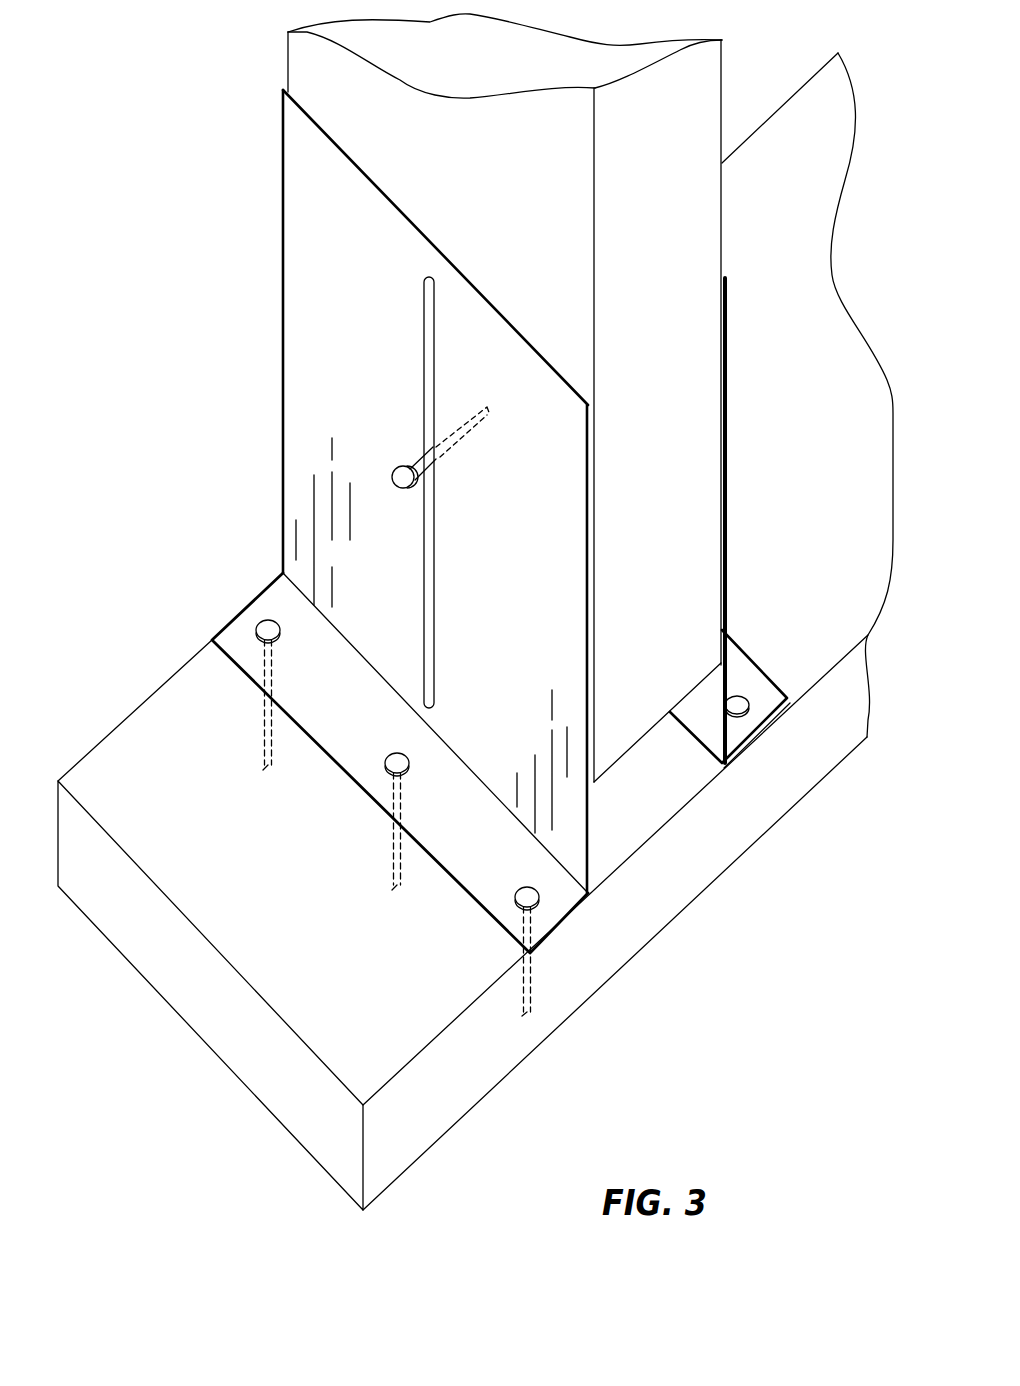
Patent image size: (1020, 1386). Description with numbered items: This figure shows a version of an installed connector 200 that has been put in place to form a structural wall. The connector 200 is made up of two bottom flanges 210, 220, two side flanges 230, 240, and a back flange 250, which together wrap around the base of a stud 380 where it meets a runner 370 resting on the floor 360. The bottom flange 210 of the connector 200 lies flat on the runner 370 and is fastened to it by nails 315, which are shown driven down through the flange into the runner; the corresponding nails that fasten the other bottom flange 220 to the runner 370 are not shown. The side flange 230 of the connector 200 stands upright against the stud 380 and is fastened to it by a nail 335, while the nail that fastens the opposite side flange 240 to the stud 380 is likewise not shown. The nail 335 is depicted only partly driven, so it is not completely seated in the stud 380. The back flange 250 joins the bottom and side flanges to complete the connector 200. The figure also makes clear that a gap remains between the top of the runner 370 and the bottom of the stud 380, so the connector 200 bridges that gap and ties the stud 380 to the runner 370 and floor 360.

The connector 200 is at (149, 441).
The bottom flange 210 is at (239, 630).
The bottom flange 220 is at (747, 678).
The side flange 230 is at (297, 483).
The side flange 240 is at (703, 713).
The back flange 250 is at (283, 140).
The nails 315 is at (279, 626).
The nail 335 is at (414, 460).
The floor 360 is at (663, 963).
The runner 370 is at (221, 1044).
The stud 380 is at (692, 207).